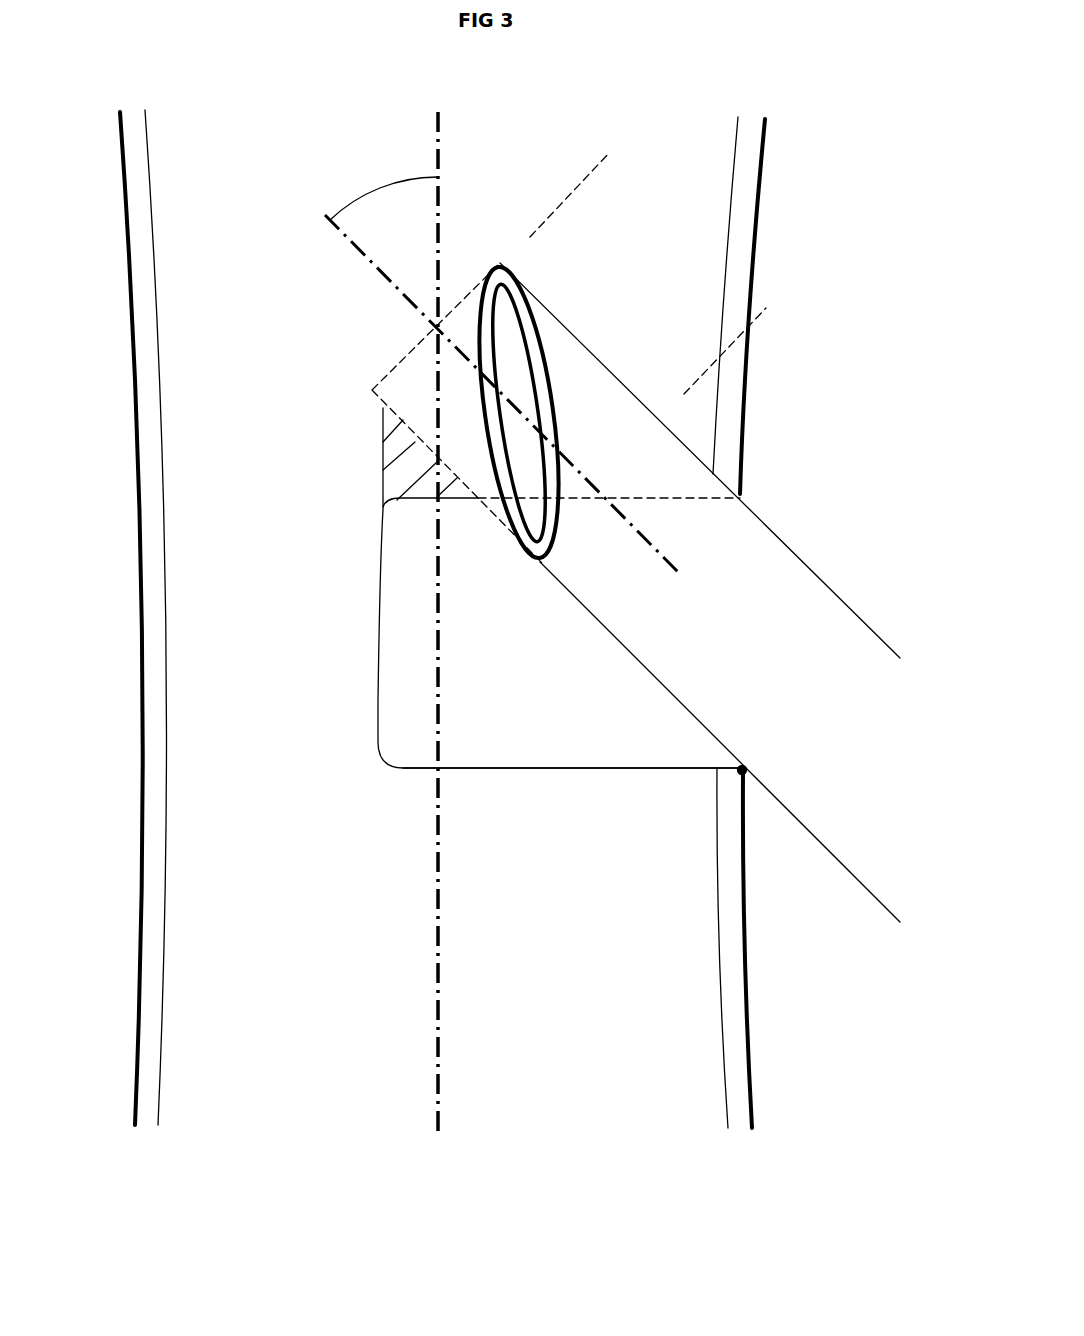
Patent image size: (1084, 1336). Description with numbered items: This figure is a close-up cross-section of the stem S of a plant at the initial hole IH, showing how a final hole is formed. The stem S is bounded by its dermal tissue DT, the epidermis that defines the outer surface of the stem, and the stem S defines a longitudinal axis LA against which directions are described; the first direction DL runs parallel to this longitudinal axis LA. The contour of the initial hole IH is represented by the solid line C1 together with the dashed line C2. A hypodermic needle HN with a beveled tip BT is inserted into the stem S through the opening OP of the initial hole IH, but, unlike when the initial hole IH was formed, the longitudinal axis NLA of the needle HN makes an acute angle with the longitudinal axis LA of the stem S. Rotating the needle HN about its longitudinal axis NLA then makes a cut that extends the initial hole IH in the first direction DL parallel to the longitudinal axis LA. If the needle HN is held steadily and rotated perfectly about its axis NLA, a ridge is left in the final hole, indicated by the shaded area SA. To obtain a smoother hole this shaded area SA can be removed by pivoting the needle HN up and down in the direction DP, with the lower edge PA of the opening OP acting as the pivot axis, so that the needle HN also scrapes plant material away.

The longitudinal axis LA is at (440, 117).
The longitudinal axis of the needle NLA is at (343, 237).
The dermal tissue DT is at (145, 443).
The stem S is at (121, 649).
The shaded area SA is at (408, 477).
The initial hole IH is at (410, 665).
The solid line C1 is at (552, 770).
The dashed line C2 is at (685, 498).
The lower edge of the opening PA is at (735, 775).
The opening OP is at (745, 652).
The hypodermic needle HN is at (833, 610).
The beveled tip BT is at (725, 345).
The first direction DL is at (873, 435).
The pivoting direction DP is at (900, 556).